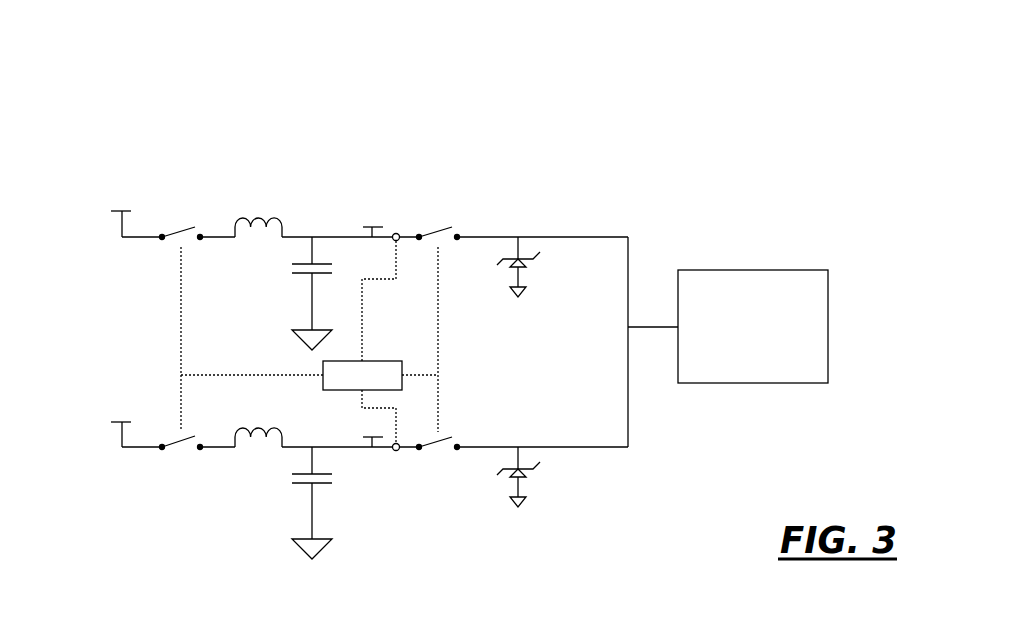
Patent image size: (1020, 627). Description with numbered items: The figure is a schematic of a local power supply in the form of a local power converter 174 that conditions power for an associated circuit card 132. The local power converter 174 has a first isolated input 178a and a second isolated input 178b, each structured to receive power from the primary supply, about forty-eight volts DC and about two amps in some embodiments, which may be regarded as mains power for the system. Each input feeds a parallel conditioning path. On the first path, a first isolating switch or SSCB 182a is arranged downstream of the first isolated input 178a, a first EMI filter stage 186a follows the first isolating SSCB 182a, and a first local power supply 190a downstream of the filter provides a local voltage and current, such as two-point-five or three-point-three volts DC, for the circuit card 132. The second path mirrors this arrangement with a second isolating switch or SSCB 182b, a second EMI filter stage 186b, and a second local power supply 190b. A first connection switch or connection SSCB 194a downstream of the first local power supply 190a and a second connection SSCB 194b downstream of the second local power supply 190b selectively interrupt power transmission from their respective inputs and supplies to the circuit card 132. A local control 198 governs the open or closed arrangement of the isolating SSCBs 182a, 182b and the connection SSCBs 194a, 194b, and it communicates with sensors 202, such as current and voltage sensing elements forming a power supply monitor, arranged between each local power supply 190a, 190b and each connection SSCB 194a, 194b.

The local power converter 174 is at (253, 122).
The first isolated input 178a is at (118, 222).
The second isolated input 178b is at (118, 428).
The first isolating switch 182a is at (195, 226).
The second isolating switch 182b is at (187, 440).
The first EMI filter stage 186a is at (266, 203).
The second EMI filter stage 186b is at (258, 487).
The first local power supply 190a is at (370, 228).
The second local power supply 190b is at (366, 449).
The first connection switch 194a is at (448, 226).
The second connection switch 194b is at (440, 440).
The local control 198 is at (383, 360).
The sensors 202 is at (395, 233).
The circuit card 132 is at (757, 270).